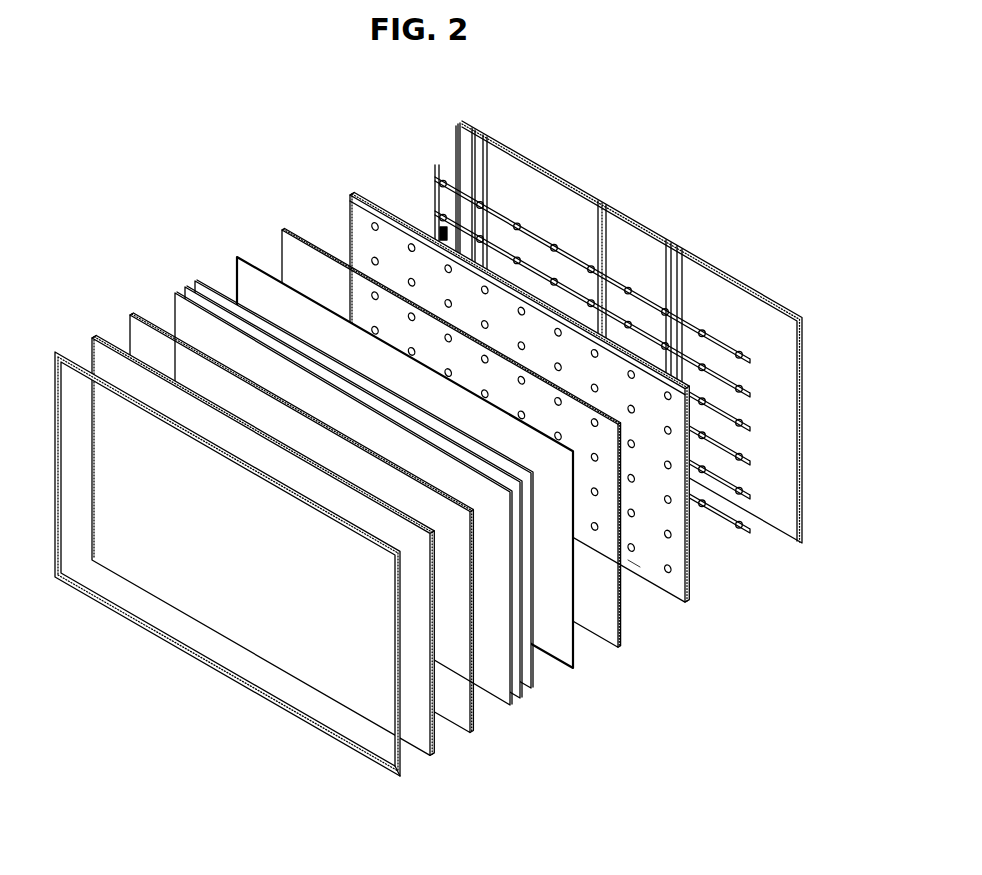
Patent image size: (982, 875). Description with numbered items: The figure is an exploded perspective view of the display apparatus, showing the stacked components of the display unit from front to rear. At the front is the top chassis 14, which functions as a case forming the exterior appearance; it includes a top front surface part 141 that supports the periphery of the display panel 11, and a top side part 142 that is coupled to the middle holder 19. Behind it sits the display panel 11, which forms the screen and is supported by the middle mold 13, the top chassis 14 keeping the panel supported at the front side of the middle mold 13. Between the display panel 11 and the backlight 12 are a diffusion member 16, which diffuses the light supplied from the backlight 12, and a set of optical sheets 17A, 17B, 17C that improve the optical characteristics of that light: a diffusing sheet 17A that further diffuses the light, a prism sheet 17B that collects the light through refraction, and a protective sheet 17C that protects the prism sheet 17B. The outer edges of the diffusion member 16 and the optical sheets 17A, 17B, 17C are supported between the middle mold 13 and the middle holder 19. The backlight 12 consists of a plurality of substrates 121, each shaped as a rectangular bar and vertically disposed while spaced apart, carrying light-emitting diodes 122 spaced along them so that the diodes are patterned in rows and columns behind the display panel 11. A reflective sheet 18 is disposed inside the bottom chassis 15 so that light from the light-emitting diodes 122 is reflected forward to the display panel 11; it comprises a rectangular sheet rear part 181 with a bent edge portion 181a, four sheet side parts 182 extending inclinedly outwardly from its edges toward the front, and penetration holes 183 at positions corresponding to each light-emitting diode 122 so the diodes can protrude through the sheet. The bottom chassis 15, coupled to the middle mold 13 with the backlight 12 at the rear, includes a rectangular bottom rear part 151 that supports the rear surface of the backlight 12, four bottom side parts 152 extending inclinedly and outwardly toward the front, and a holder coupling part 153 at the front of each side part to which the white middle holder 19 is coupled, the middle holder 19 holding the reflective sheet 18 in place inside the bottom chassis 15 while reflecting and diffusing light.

The display panel 11 is at (434, 756).
The backlight 12 is at (642, 349).
The substrate 121 is at (755, 430).
The light-emitting diode 122 is at (702, 333).
The middle mold 13 is at (481, 739).
The top chassis 14 is at (255, 588).
The top front surface part 141 is at (200, 668).
The top side part 142 is at (403, 768).
The bottom chassis 15 is at (632, 325).
The bottom rear part 151 is at (783, 488).
The bottom side part 152 is at (460, 152).
The holder coupling part 153 is at (460, 127).
The diffusion member 16 is at (578, 666).
The diffusing sheet 17A is at (532, 689).
The prism sheet 17B is at (522, 699).
The protective sheet 17C is at (512, 707).
The reflective sheet 18 is at (529, 420).
The sheet rear part 181 is at (672, 553).
The bent portion of reflective sheet 181a is at (396, 228).
The sheet side part 182 is at (358, 232).
The penetration hole 183 is at (628, 570).
The middle holder 19 is at (276, 248).